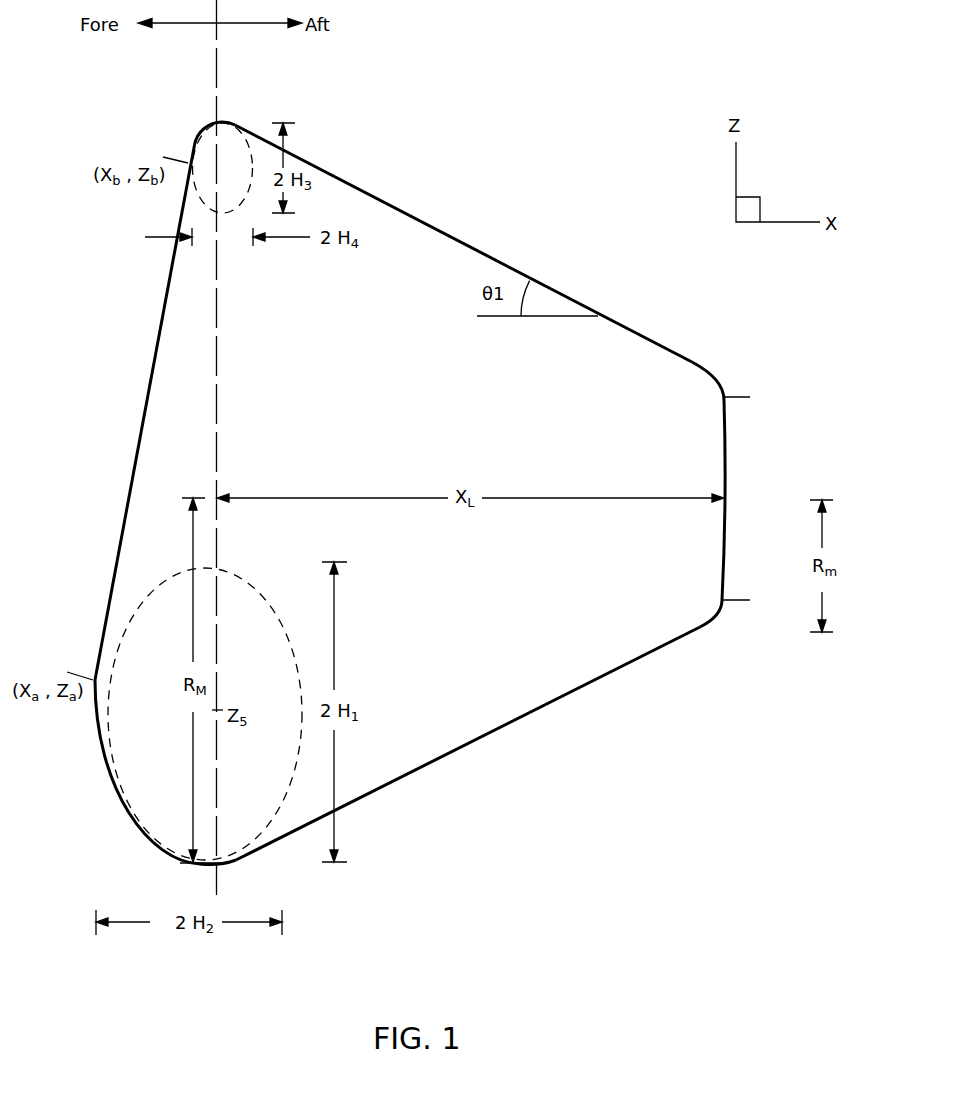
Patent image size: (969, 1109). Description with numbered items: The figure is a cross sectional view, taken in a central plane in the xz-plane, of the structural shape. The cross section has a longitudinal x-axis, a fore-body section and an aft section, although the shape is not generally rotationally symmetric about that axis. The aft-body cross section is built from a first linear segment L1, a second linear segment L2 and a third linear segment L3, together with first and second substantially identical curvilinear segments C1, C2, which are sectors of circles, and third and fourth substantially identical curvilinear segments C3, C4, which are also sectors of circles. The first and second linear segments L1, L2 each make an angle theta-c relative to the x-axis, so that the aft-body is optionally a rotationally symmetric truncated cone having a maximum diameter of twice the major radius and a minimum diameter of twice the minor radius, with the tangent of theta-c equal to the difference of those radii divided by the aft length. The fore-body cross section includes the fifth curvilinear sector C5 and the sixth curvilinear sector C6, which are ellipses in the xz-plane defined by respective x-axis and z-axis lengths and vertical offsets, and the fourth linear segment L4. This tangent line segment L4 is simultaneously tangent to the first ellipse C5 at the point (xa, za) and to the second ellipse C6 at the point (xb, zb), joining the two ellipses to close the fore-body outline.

The first curvilinear segment C1 is at (695, 632).
The second curvilinear segment C2 is at (710, 338).
The third curvilinear segment C3 is at (235, 862).
The fourth curvilinear segment C4 is at (247, 123).
The fifth curvilinear sector C5 is at (137, 772).
The sixth curvilinear sector C6 is at (188, 128).
The first linear segment L1 is at (468, 743).
The second linear segment L2 is at (463, 243).
The third linear segment L3 is at (737, 498).
The fourth linear segment L4 is at (145, 412).